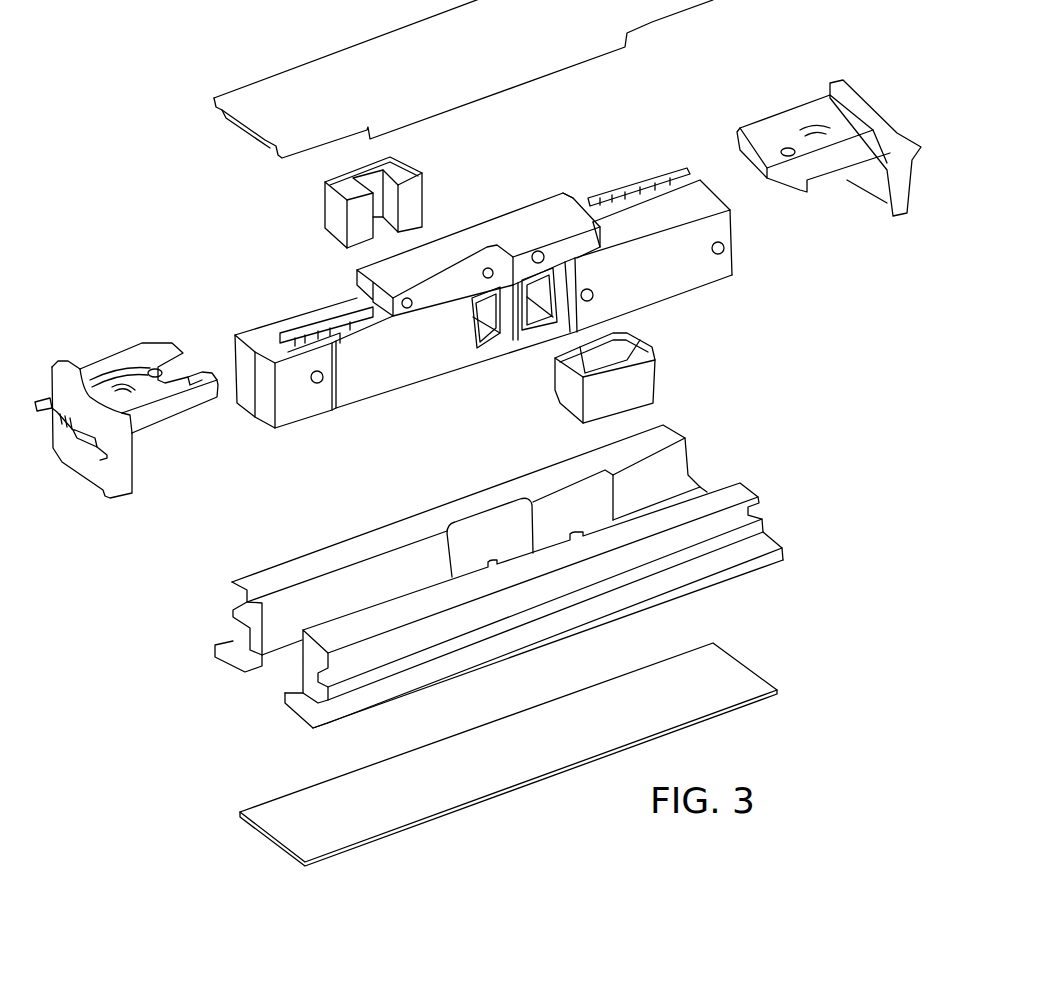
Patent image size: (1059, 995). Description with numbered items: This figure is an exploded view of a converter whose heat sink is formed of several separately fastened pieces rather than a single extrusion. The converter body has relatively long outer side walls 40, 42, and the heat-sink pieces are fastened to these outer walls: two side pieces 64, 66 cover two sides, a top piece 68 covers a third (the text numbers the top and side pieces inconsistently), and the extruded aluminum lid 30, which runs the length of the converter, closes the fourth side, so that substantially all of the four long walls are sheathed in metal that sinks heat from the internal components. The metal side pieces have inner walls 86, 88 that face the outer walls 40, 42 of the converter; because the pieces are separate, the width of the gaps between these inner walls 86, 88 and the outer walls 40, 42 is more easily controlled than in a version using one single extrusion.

The lid 30 is at (323, 80).
The side wall 40 is at (511, 298).
The side wall 42 is at (283, 313).
The side piece 64 is at (450, 548).
The side piece 66 is at (527, 600).
The base plate 68 is at (588, 741).
The inner wall of metal side 86 is at (387, 576).
The inner wall of metal side 88 is at (302, 662).